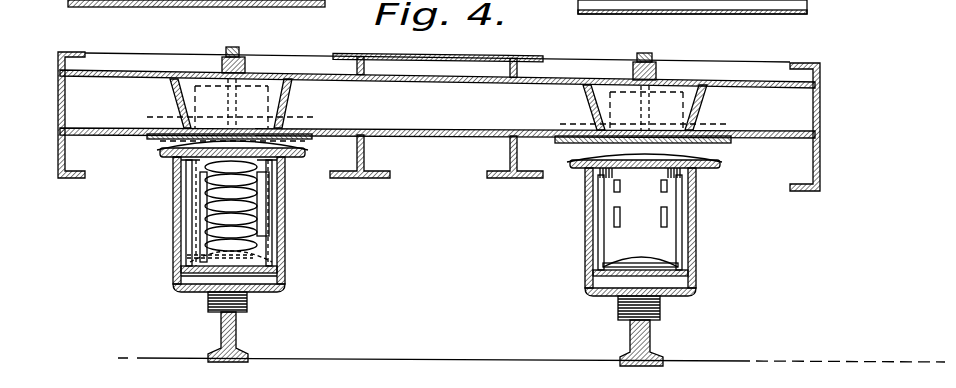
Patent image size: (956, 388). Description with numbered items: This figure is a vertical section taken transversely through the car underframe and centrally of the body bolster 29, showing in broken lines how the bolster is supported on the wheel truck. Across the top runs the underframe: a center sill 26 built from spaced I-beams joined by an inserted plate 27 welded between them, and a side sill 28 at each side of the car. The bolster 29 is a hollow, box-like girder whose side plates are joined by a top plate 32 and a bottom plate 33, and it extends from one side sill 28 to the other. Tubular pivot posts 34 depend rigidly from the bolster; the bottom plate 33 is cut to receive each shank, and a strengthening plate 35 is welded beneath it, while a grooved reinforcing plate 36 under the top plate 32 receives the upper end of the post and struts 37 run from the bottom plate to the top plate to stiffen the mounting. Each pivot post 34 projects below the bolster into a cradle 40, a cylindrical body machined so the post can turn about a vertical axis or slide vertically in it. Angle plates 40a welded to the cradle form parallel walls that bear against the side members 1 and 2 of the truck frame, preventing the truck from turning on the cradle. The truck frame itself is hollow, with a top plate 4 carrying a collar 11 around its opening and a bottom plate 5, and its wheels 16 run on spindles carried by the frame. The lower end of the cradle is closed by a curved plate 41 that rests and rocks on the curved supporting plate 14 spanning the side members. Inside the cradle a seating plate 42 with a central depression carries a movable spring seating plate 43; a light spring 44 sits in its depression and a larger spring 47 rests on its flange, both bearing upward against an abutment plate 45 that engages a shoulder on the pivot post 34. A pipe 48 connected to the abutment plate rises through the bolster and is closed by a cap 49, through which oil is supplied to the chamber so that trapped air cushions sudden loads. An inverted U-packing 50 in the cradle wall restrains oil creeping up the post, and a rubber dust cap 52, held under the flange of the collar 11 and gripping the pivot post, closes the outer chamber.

The side member 1 is at (174, 282).
The side member 2 is at (588, 270).
The top plate 4 is at (160, 158).
The bottom plate 5 is at (198, 289).
The collar 11 is at (156, 152).
The curved supporting plate 14 is at (240, 246).
The wheel 16 is at (213, 306).
The center sill 26 is at (510, 153).
The inserted plate 27 is at (468, 60).
The side sill 28 is at (64, 54).
The bolster 29 is at (756, 195).
The top plate 32 is at (730, 81).
The bottom plate 33 is at (779, 130).
The pivot post 34 is at (288, 78).
The strengthening plate 35 is at (306, 151).
The reinforcing plate 36 is at (253, 84).
The strut 37 is at (181, 103).
The cradle 40 is at (185, 205).
The angle plate 40a is at (603, 212).
The curved plate 41 is at (286, 263).
The seating plate 42 is at (283, 250).
The movable spring seating plate 43 is at (283, 222).
The light spring 44 is at (283, 179).
The abutment plate 45 is at (185, 172).
The spring 47 is at (283, 201).
The pipe 48 is at (228, 100).
The cap 49 is at (236, 46).
The U-packing 50 is at (181, 228).
The rubber dust cap 52 is at (160, 147).